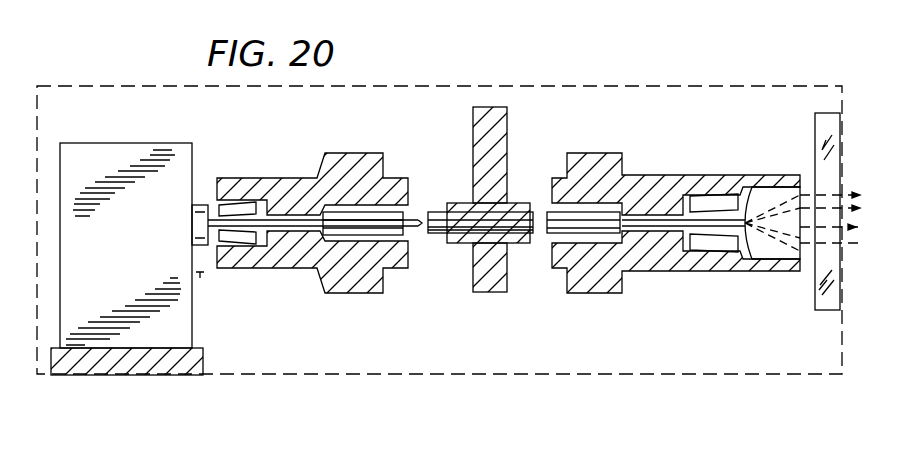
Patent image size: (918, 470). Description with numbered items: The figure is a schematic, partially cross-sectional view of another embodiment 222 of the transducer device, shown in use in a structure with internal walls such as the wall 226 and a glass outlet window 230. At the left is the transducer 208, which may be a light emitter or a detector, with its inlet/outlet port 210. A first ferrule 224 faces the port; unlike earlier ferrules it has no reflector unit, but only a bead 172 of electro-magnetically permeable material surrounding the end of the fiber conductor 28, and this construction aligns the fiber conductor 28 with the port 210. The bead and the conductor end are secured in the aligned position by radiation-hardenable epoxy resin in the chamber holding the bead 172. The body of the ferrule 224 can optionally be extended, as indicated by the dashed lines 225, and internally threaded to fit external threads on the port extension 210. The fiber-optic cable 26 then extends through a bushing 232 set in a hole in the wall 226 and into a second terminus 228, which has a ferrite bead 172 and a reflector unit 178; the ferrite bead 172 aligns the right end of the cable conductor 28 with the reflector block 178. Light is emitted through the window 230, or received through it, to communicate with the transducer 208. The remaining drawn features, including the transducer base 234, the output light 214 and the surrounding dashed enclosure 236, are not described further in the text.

The fiber-optic cable 26 is at (388, 224).
The fiber conductor 28 is at (318, 185).
The bead 172 is at (237, 213).
The reflector unit 178 is at (767, 185).
The transducer 208 is at (151, 254).
The inlet/outlet port 210 is at (204, 203).
The output light beam 214 is at (843, 177).
The transducer device embodiment 222 is at (717, 47).
The first ferrule 224 is at (285, 268).
The dashed lines 225 is at (203, 281).
The wall 226 is at (487, 292).
The second terminus 228 is at (612, 294).
The glass outlet window 230 is at (815, 295).
The bushing 232 is at (507, 205).
The base 234 is at (133, 368).
The housing enclosure 236 is at (470, 374).